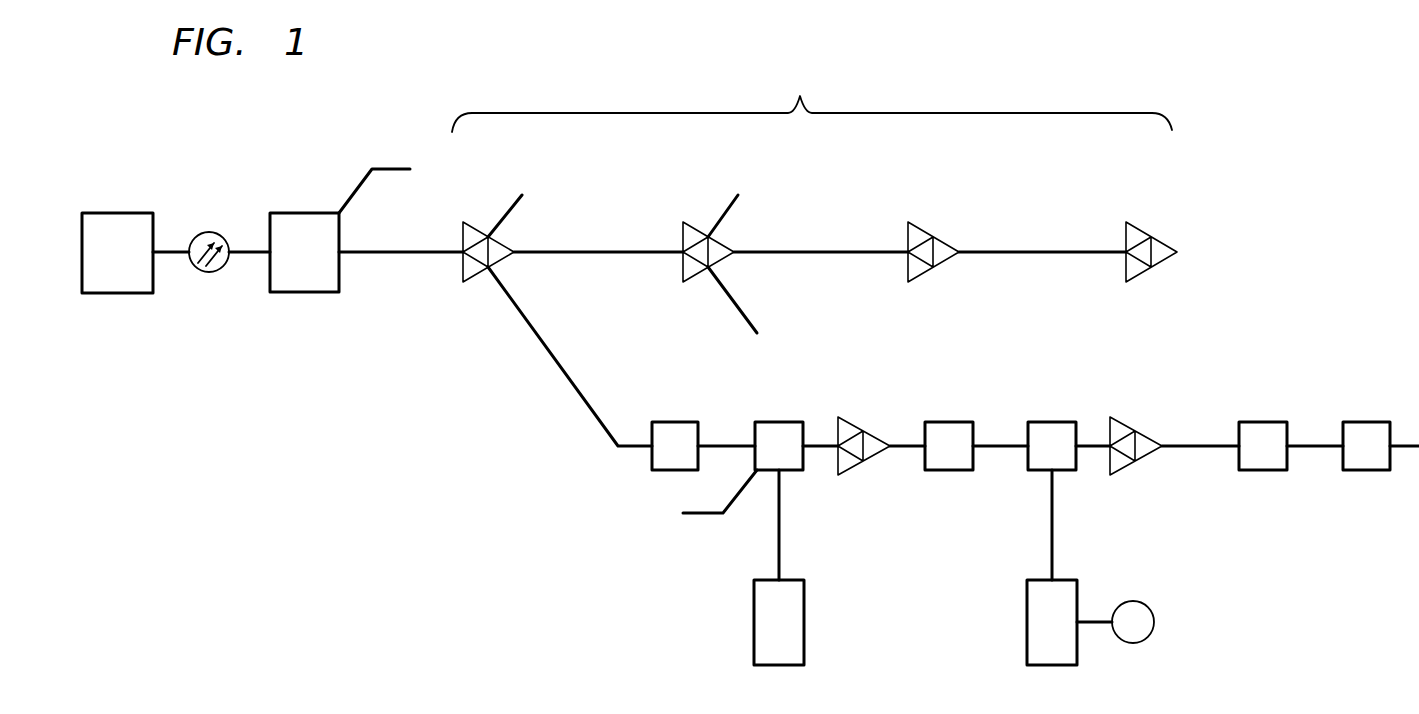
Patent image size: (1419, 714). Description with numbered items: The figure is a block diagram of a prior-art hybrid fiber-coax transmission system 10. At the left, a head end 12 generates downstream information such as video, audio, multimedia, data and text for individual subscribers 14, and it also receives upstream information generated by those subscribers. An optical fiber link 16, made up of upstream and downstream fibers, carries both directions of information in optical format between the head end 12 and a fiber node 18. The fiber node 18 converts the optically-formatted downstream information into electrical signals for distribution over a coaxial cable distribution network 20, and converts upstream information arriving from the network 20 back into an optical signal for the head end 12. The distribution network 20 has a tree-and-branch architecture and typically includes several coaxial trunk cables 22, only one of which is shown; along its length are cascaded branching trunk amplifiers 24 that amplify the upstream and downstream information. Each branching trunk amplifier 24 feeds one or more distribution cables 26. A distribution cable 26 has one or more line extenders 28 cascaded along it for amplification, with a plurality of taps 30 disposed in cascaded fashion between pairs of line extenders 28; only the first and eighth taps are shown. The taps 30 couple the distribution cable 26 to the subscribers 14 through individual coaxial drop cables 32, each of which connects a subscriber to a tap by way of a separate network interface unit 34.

The hybrid-fiber-coax transmission system 10 is at (361, 462).
The head end 12 is at (122, 213).
The subscriber 14 is at (1121, 636).
The optical fiber link 16 is at (256, 250).
The fiber node 18 is at (300, 293).
The coaxial cable distribution network 20 is at (812, 94).
The coaxial trunk cable 22 is at (391, 169).
The branching trunk amplifier 24 is at (463, 222).
The distribution cable 26 is at (521, 195).
The line extender 28 is at (851, 415).
The tap 30 is at (673, 422).
The coaxial drop cable 32 is at (702, 514).
The network interface unit 34 is at (754, 623).